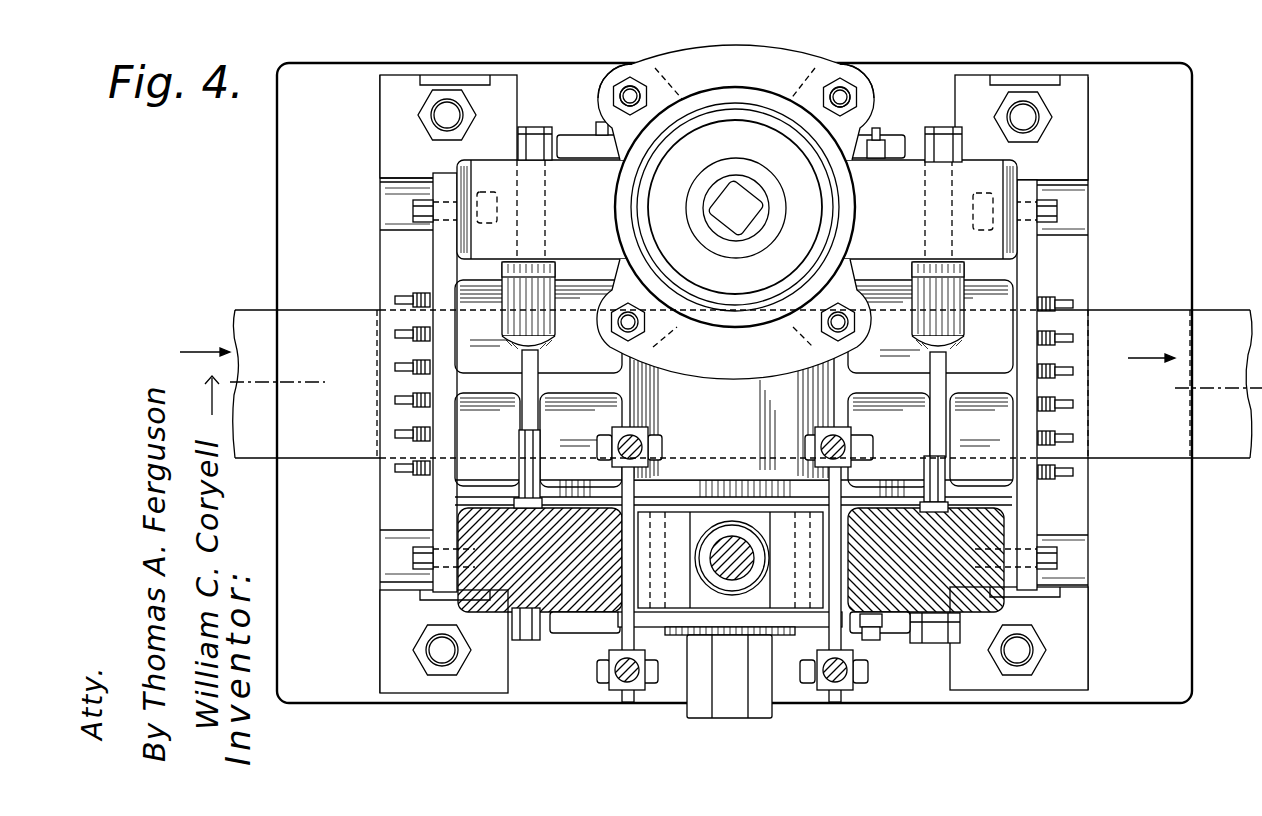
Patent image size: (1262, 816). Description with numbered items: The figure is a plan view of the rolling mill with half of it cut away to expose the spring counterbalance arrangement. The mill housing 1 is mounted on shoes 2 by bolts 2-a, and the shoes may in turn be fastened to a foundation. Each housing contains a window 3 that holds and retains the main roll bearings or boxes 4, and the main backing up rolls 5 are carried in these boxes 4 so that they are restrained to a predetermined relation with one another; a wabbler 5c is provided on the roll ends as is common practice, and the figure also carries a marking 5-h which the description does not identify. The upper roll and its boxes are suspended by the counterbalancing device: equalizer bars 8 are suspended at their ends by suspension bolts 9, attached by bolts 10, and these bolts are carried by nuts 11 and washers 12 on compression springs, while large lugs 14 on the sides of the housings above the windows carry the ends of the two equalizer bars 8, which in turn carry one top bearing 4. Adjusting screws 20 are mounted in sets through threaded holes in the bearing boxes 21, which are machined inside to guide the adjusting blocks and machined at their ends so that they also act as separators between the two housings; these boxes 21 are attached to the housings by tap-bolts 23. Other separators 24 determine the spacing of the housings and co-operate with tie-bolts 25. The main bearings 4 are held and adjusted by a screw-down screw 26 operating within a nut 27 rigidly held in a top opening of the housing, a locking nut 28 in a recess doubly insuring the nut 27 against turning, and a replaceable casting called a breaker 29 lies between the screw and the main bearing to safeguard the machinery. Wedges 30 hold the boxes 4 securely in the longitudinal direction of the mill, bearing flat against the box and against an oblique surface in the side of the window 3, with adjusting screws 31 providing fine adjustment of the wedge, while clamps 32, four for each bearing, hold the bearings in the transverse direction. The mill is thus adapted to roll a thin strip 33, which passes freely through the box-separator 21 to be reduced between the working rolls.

The mill housing 1 is at (593, 180).
The shoes 2 is at (277, 160).
The bolts 2-a is at (447, 110).
The window 3 is at (204, 395).
The main roll bearings or boxes 4 is at (641, 622).
The main backing up rolls 5 is at (705, 382).
The knurled ring 5-h is at (796, 634).
The wabbler 5c is at (728, 714).
The equalizer bars 8 is at (628, 695).
The suspension bolts 9 is at (630, 91).
The bolts 10 is at (874, 448).
The nuts 11 is at (640, 88).
The washers 12 is at (712, 60).
The large lugs 14 is at (616, 82).
The adjusting screws 20 is at (410, 296).
The bearing boxes 21 is at (437, 505).
The tap-bolts 23 is at (413, 210).
The separators 24 is at (516, 318).
The tie-bolts 25 is at (546, 128).
The screw-down screw 26 is at (745, 207).
The nut 27 is at (742, 250).
The locking nut 28 is at (660, 212).
The breaker 29 is at (700, 582).
The wedges 30 is at (882, 147).
The adjusting screw 31 is at (867, 652).
The clamps 32 is at (583, 135).
The strip 33 is at (255, 313).